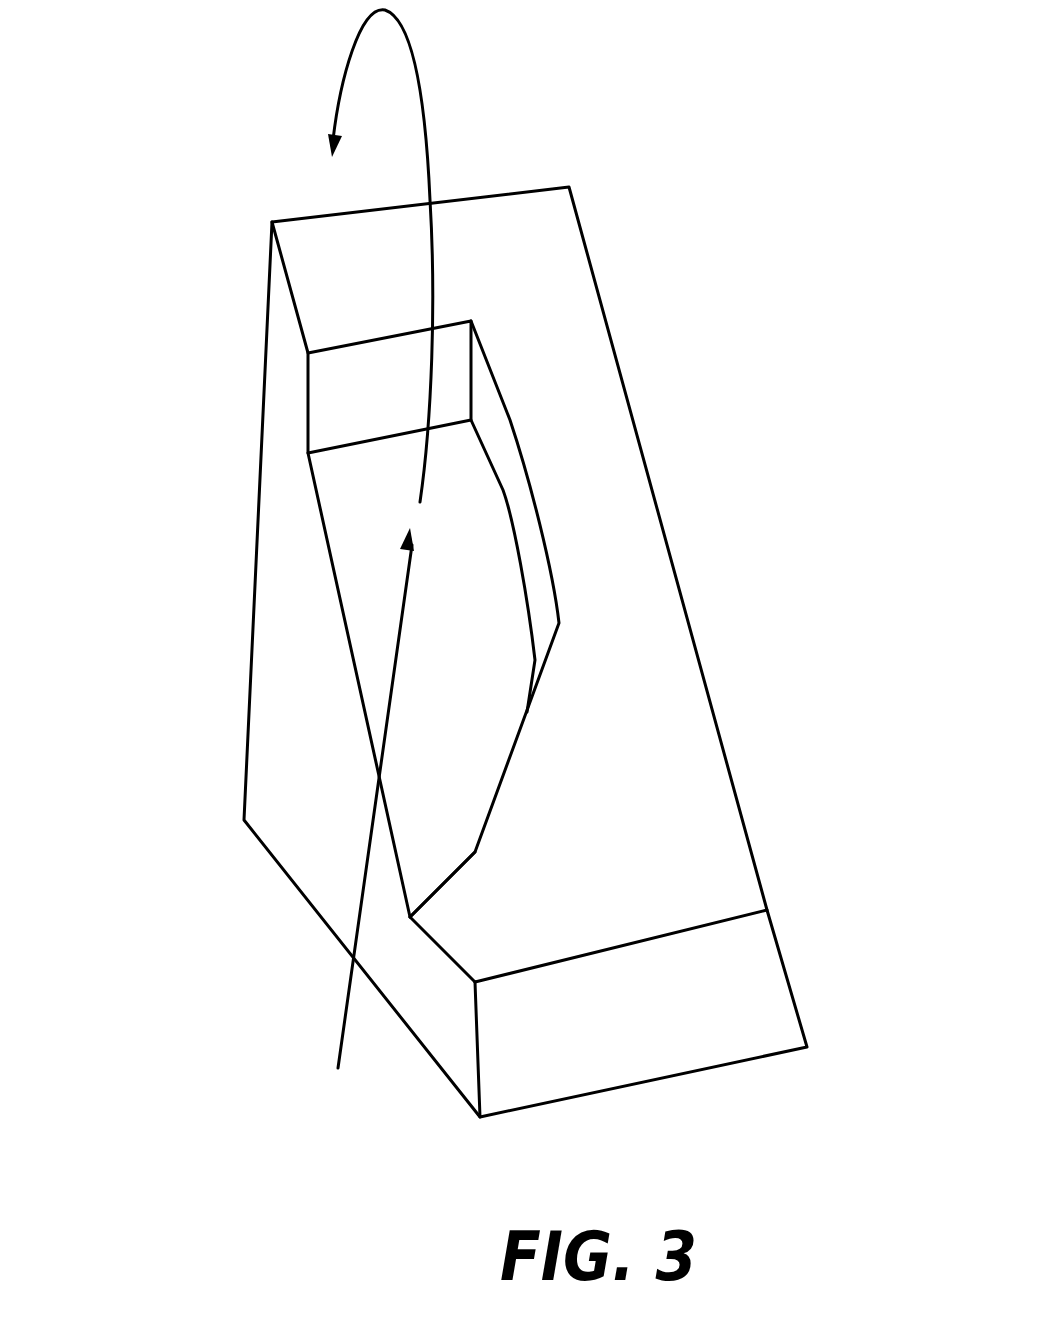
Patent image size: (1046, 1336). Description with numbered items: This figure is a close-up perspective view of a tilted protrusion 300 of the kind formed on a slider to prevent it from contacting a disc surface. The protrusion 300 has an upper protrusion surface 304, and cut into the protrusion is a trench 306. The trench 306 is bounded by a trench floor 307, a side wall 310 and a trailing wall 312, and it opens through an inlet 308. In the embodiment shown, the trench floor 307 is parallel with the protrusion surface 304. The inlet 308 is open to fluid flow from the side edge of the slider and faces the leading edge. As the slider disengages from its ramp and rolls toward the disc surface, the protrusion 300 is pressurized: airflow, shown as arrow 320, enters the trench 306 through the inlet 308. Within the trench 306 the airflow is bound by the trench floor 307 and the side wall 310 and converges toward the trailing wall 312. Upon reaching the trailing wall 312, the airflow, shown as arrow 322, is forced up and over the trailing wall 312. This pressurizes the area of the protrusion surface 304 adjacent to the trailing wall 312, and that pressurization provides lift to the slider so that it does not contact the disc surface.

The protrusion 300 is at (122, 92).
The protrusion surface 304 is at (572, 356).
The trench 306 is at (340, 500).
The trench floor 307 is at (492, 680).
The inlet 308 is at (340, 626).
The side wall 310 is at (543, 547).
The trailing wall 312 is at (343, 343).
The airflow arrow 320 is at (345, 990).
The airflow arrow 322 is at (425, 122).